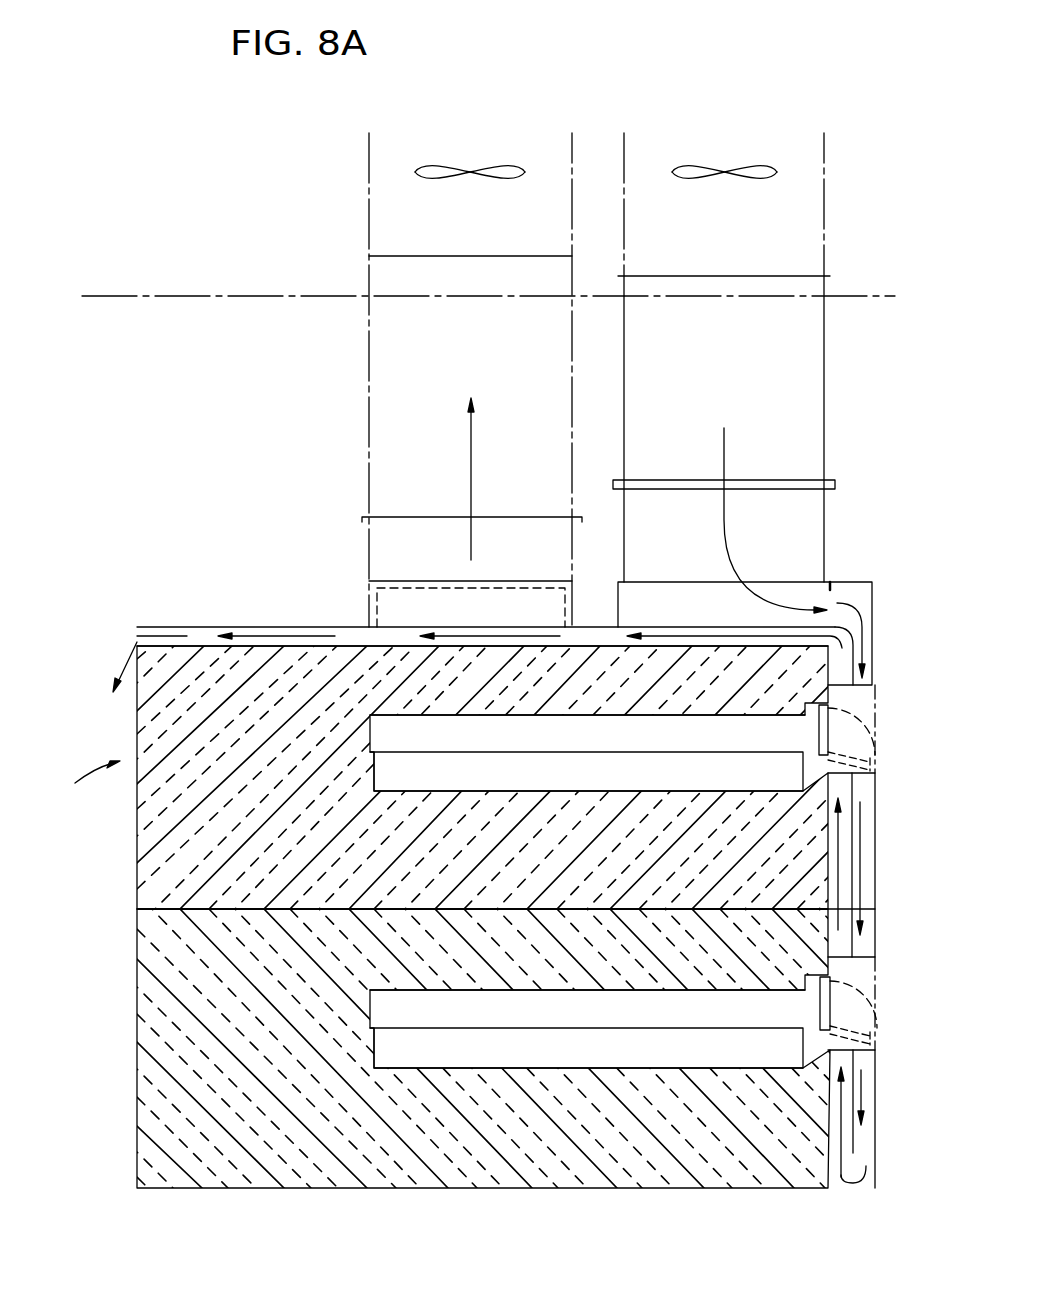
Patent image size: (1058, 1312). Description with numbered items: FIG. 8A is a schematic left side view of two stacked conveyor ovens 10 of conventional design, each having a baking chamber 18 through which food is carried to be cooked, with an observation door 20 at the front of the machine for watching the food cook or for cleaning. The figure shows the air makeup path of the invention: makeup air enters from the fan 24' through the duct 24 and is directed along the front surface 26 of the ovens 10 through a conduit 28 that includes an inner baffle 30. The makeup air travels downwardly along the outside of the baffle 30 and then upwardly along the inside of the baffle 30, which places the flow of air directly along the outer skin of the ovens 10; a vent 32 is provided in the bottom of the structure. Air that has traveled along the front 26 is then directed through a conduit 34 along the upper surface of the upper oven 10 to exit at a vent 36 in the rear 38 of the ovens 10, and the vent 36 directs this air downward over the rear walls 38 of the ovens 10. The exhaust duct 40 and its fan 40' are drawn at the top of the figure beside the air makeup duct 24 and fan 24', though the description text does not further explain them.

The conveyor oven 10 is at (137, 842).
The baking chamber 18 is at (598, 781).
The observation door 20 is at (845, 752).
The duct 24 is at (753, 373).
The fan 24' is at (724, 147).
The front surface 26 is at (830, 853).
The conduit 28 is at (875, 618).
The inner baffle 30 is at (855, 1135).
The vent 32 is at (850, 1188).
The conduit 34 is at (283, 627).
The vent 36 is at (137, 636).
The rear wall 38 is at (90, 790).
The exhaust duct 40 is at (438, 380).
The exhaust fan 40' is at (470, 147).